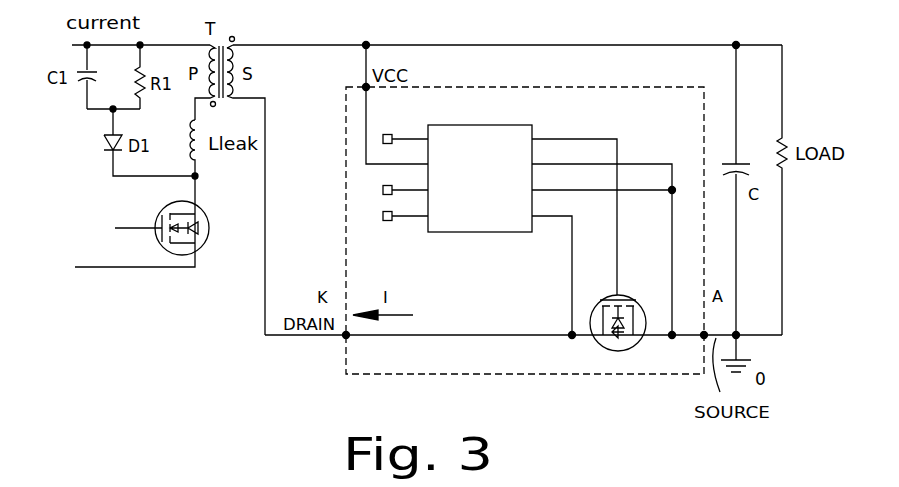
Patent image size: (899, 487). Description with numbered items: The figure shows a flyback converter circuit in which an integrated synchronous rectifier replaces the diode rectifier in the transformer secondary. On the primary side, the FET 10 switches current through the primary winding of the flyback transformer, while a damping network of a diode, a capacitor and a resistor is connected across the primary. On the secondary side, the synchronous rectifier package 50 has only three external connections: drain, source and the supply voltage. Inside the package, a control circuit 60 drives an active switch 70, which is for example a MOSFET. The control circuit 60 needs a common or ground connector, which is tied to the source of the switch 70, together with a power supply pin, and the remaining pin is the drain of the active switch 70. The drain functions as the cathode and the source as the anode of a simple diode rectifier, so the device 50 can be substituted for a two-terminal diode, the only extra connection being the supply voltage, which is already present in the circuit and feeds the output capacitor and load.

The FET 10 is at (200, 244).
The synchronous rectifier package 50 is at (346, 163).
The control circuit 60 is at (508, 233).
The active switch 70 is at (628, 295).